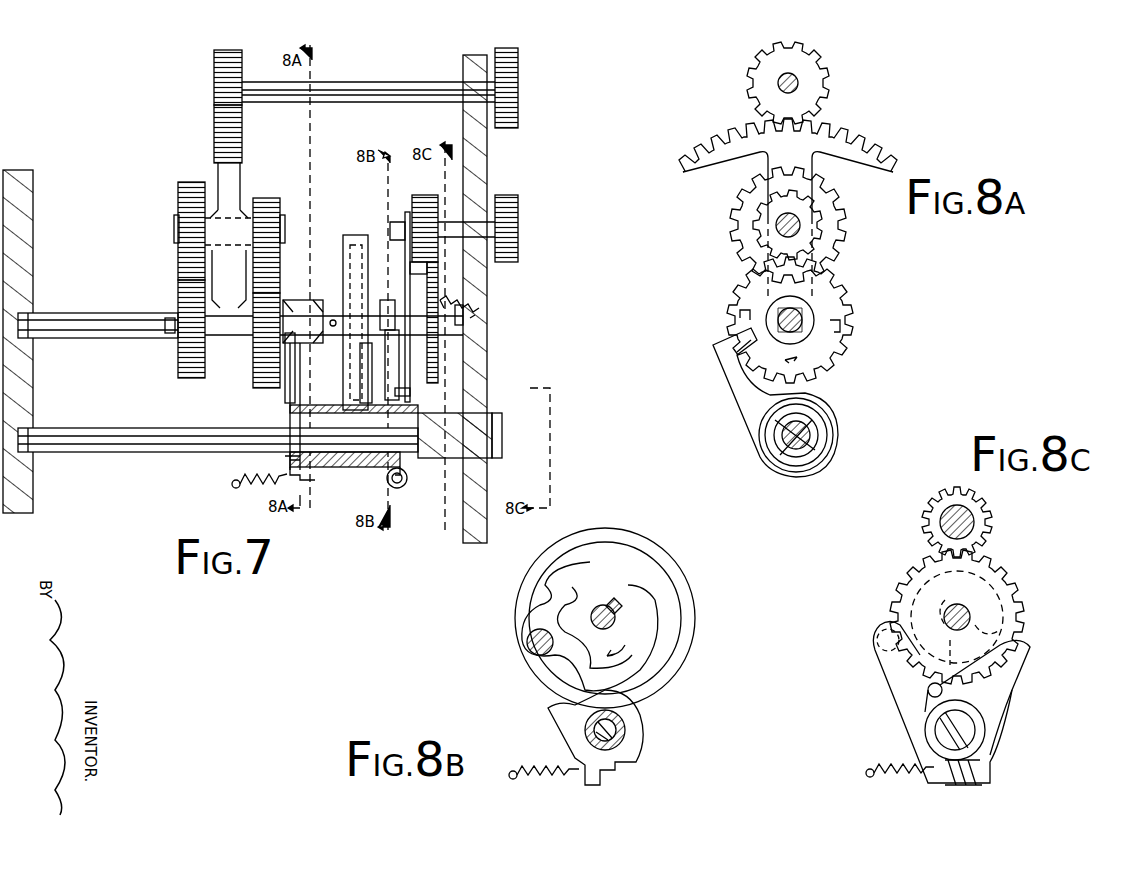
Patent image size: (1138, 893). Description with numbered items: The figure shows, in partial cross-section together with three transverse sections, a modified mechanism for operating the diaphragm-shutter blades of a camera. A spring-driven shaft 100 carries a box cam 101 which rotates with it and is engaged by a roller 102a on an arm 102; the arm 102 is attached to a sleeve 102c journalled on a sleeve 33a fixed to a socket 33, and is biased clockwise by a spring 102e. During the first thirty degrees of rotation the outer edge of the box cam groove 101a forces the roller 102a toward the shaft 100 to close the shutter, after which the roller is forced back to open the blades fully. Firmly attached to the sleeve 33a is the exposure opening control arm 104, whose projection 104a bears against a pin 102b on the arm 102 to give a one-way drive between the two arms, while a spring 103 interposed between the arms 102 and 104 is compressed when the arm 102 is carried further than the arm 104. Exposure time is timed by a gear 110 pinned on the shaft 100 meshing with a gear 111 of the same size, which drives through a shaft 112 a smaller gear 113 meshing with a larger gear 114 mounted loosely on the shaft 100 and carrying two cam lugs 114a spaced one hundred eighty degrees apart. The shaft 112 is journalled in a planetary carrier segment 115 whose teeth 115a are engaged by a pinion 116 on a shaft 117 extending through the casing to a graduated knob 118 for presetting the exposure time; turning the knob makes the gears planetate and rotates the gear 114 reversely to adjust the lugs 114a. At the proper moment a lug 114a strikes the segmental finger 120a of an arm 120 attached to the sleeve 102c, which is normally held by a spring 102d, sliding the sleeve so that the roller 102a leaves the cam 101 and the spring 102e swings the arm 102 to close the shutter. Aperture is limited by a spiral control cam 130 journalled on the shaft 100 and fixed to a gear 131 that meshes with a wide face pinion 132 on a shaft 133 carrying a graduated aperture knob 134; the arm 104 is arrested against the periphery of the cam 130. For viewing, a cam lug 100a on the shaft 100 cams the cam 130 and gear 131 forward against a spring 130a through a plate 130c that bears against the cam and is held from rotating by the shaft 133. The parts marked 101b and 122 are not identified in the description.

In FIG. 7, the socket 33 is at (478, 422).
In FIG. 7, the sleeve 33a is at (285, 462).
In FIG. 8A, the sleeve 33a is at (785, 460).
In FIG. 8B, the sleeve 33a is at (627, 740).
In FIG. 8C, the sleeve 33a is at (967, 738).
In FIG. 7, the shaft 100 is at (90, 318).
In FIG. 8A, the shaft 100 is at (802, 320).
In FIG. 8B, the shaft 100 is at (615, 622).
In FIG. 8C, the shaft 100 is at (948, 612).
In FIG. 7, the cam lug 100a is at (402, 330).
In FIG. 8B, the cam lug 100a is at (612, 604).
In FIG. 7, the box cam 101 is at (350, 240).
In FIG. 8A, the box cam 101 is at (815, 343).
In FIG. 8B, the box cam 101 is at (608, 530).
In FIG. 8B, the box cam groove outer edge 101a is at (655, 580).
In FIG. 8B, the cam groove 101b is at (566, 594).
In FIG. 7, the arm 102 is at (375, 368).
In FIG. 8B, the arm 102 is at (572, 723).
In FIG. 8C, the arm 102 is at (905, 690).
In FIG. 7, the roller 102a is at (360, 357).
In FIG. 8B, the roller 102a is at (527, 641).
In FIG. 8C, the roller 102a is at (876, 652).
In FIG. 7, the pin 102b is at (404, 392).
In FIG. 8C, the pin 102b is at (920, 716).
In FIG. 7, the sleeve 102c is at (312, 470).
In FIG. 8A, the sleeve 102c is at (820, 428).
In FIG. 7, the spring 102d is at (260, 488).
In FIG. 8B, the spring 102e is at (560, 782).
In FIG. 8C, the spring 102e is at (910, 780).
In FIG. 7, the spring 103 is at (399, 488).
In FIG. 8C, the spring 103 is at (968, 788).
In FIG. 7, the exposure opening control arm 104 is at (392, 365).
In FIG. 8C, the exposure opening control arm 104 is at (1020, 653).
In FIG. 8C, the projection 104a is at (992, 706).
In FIG. 7, the gear 110 is at (190, 348).
In FIG. 7, the gear 111 is at (190, 198).
In FIG. 8A, the gear 111 is at (830, 196).
In FIG. 7, the shaft 112 is at (176, 230).
In FIG. 8A, the shaft 112 is at (800, 223).
In FIG. 7, the gear 113 is at (262, 205).
In FIG. 8A, the gear 113 is at (805, 238).
In FIG. 7, the gear 114 is at (262, 378).
In FIG. 8A, the gear 114 is at (832, 282).
In FIG. 7, the cam lugs 114a is at (293, 300).
In FIG. 8A, the cam lugs 114a is at (740, 308).
In FIG. 7, the planetary carrier segment 115 is at (228, 162).
In FIG. 8A, the planetary carrier segment 115 is at (788, 168).
In FIG. 7, the teeth 115a is at (228, 130).
In FIG. 8A, the teeth 115a is at (855, 130).
In FIG. 7, the pinion 116 is at (228, 82).
In FIG. 8A, the pinion 116 is at (810, 66).
In FIG. 7, the shaft 117 is at (442, 84).
In FIG. 8A, the shaft 117 is at (800, 84).
In FIG. 7, the graduated knob 118 is at (518, 56).
In FIG. 7, the arm 120 is at (288, 388).
In FIG. 8A, the arm 120 is at (745, 402).
In FIG. 8A, the segmental finger 120a is at (740, 340).
In FIG. 7, the shaft 122 is at (205, 440).
In FIG. 8A, the shaft 122 is at (812, 446).
In FIG. 8B, the shaft 122 is at (626, 720).
In FIG. 7, the spiral control cam 130 is at (440, 352).
In FIG. 8C, the spiral control cam 130 is at (1012, 592).
In FIG. 7, the spring 130a is at (470, 302).
In FIG. 7, the plate 130c is at (410, 268).
In FIG. 7, the gear or segment 131 is at (412, 265).
In FIG. 8C, the gear or segment 131 is at (920, 583).
In FIG. 7, the wide face pinion 132 is at (418, 198).
In FIG. 8C, the wide face pinion 132 is at (985, 520).
In FIG. 7, the shaft 133 is at (396, 224).
In FIG. 7, the graduated aperture controlling adjustment knob 134 is at (518, 210).